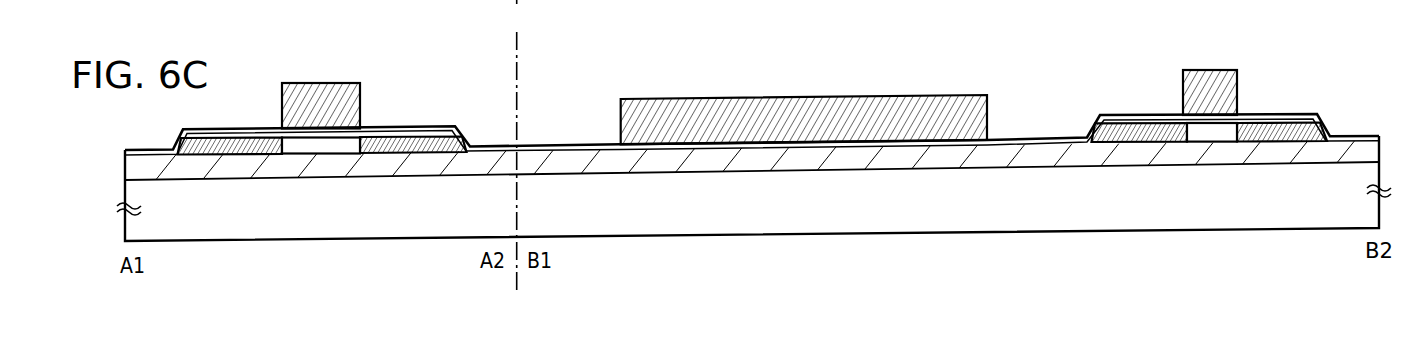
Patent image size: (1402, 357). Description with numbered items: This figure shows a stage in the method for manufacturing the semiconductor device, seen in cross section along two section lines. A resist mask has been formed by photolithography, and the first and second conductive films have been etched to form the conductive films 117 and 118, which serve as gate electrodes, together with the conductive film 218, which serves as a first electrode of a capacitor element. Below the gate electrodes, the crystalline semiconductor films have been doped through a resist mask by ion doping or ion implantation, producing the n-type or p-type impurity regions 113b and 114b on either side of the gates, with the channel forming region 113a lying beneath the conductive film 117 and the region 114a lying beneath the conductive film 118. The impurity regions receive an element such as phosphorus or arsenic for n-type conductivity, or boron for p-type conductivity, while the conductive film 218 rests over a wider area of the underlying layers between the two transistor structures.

The channel forming region 113a is at (327, 145).
The impurity region 113b is at (230, 155).
The region 114a is at (1210, 138).
The impurity region 114b is at (1132, 143).
The conductive film 117 is at (293, 107).
The conductive film 118 is at (1196, 95).
The conductive film 218 is at (793, 97).